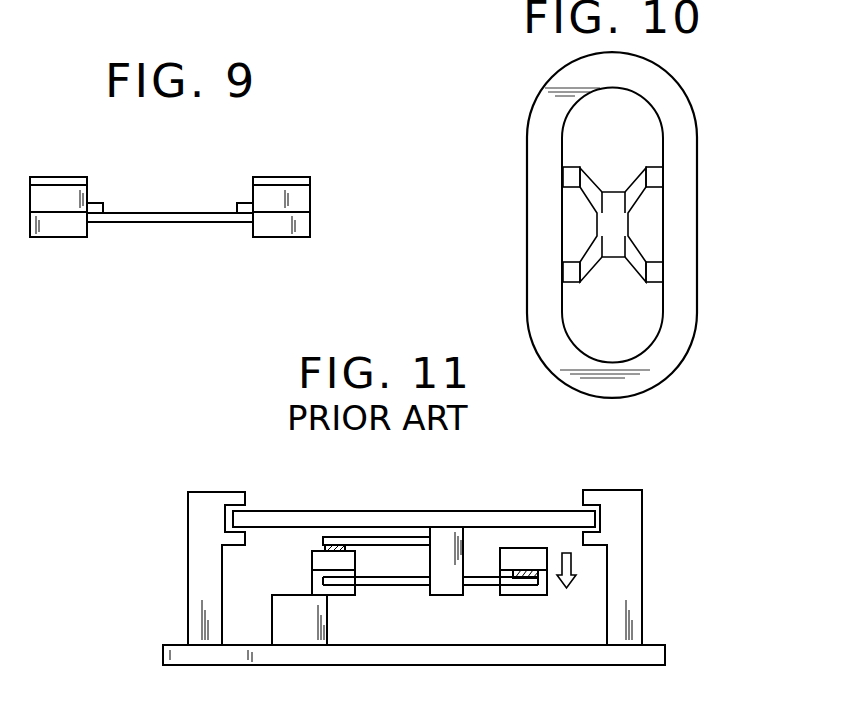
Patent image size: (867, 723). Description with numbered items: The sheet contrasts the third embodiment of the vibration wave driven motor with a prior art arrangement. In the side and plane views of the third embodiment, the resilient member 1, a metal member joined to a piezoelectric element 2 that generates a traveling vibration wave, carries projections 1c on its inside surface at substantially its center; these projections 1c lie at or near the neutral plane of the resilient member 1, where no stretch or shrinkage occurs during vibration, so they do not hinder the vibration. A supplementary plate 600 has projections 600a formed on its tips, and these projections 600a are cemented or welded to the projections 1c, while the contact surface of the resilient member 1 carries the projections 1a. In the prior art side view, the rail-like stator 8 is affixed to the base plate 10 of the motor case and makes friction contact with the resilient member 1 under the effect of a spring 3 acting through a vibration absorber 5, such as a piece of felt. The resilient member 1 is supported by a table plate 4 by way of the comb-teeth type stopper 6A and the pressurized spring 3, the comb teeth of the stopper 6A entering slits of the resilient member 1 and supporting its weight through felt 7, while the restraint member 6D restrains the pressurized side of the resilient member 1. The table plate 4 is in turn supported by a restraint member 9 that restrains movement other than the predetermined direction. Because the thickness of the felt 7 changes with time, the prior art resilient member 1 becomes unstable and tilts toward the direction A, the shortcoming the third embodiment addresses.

In FIG. 9, the resilient member 1 is at (303, 197).
In FIG. 10, the resilient member 1 is at (694, 112).
In FIG. 11, the resilient member 1 is at (312, 562).
In FIG. 9, the projections 1a is at (293, 233).
In FIG. 11, the projections 1a is at (343, 595).
In FIG. 9, the projections 1c is at (103, 203).
In FIG. 10, the projections 1c is at (660, 177).
In FIG. 9, the piezoelectric element 2 is at (300, 178).
In FIG. 10, the piezoelectric element 2 is at (688, 160).
In FIG. 11, the piezoelectric element 2 is at (312, 550).
In FIG. 11, the spring 3 is at (362, 535).
In FIG. 11, the table plate 4 is at (445, 520).
In FIG. 11, the vibration absorber 5 is at (328, 547).
In FIG. 11, the comb-teeth type stopper 6A is at (483, 586).
In FIG. 11, the restraint member 6D is at (390, 586).
In FIG. 11, the felt 7 is at (520, 579).
In FIG. 11, the rail-like stator 8 is at (297, 640).
In FIG. 11, the restraint member 9 is at (637, 567).
In FIG. 11, the base plate 10 is at (600, 653).
In FIG. 9, the supplementary plate 600 is at (187, 217).
In FIG. 10, the supplementary plate 600 is at (628, 247).
In FIG. 9, the projections 600a is at (92, 222).
In FIG. 11, the direction A is at (578, 569).